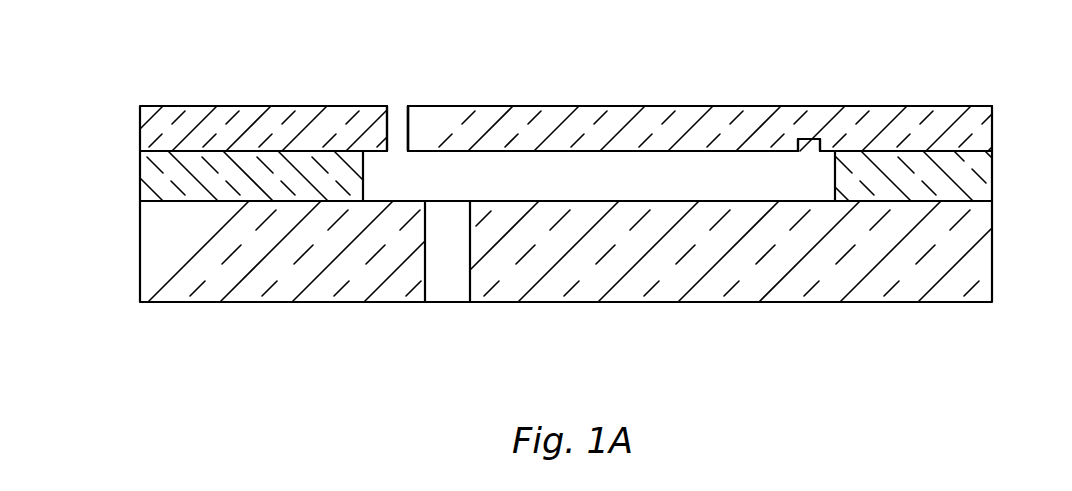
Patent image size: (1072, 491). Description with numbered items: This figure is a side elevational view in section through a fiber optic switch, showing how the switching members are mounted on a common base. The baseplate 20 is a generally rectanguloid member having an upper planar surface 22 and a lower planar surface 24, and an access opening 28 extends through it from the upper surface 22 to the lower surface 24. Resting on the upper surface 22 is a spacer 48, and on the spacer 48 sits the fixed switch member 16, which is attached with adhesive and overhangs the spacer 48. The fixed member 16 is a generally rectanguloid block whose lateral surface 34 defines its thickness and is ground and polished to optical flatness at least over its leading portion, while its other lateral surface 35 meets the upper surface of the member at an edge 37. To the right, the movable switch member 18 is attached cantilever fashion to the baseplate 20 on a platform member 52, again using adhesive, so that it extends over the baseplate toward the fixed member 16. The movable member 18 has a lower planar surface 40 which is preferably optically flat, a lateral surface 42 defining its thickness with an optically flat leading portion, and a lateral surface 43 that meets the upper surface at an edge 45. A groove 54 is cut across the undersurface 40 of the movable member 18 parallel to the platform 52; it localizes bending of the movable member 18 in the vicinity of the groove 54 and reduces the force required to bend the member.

The fixed switch member 16 is at (263, 102).
The movable switch member 18 is at (696, 94).
The baseplate 20 is at (566, 276).
The upper planar surface 22 is at (690, 206).
The lower planar surface 24 is at (831, 303).
The access opening 28 is at (470, 272).
The lateral surface 34 is at (288, 118).
The lateral surface 35 is at (406, 143).
The edge 37 is at (397, 130).
The lower planar surface 40 is at (645, 107).
The lateral surface 42 is at (750, 120).
The lateral surface 43 is at (470, 117).
The edge 45 is at (413, 147).
The spacer 48 is at (140, 187).
The platform member 52 is at (993, 180).
The groove 54 is at (813, 137).